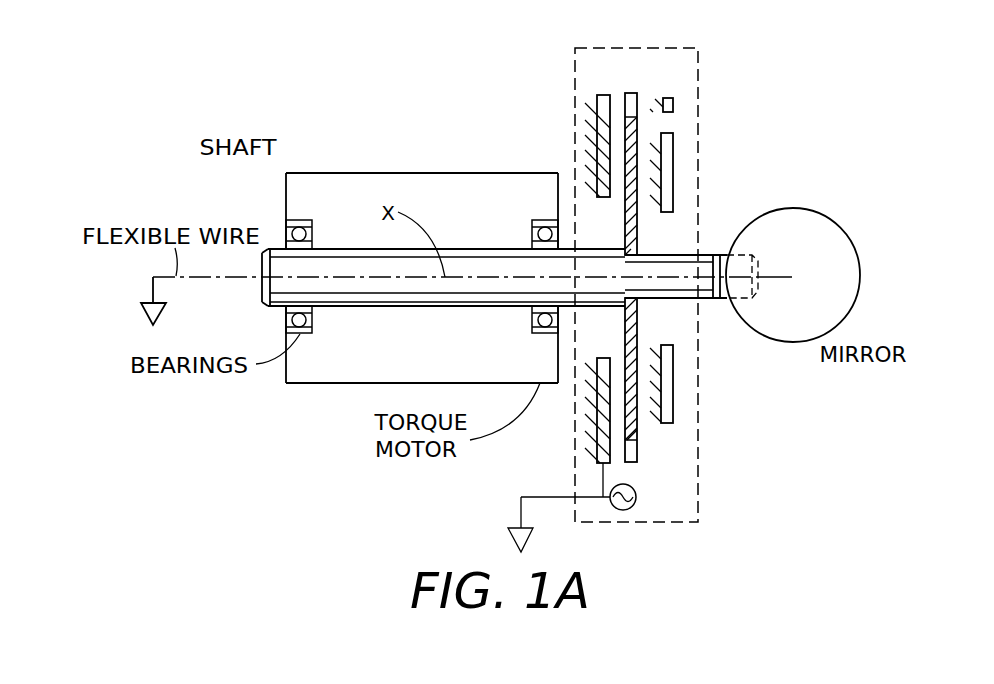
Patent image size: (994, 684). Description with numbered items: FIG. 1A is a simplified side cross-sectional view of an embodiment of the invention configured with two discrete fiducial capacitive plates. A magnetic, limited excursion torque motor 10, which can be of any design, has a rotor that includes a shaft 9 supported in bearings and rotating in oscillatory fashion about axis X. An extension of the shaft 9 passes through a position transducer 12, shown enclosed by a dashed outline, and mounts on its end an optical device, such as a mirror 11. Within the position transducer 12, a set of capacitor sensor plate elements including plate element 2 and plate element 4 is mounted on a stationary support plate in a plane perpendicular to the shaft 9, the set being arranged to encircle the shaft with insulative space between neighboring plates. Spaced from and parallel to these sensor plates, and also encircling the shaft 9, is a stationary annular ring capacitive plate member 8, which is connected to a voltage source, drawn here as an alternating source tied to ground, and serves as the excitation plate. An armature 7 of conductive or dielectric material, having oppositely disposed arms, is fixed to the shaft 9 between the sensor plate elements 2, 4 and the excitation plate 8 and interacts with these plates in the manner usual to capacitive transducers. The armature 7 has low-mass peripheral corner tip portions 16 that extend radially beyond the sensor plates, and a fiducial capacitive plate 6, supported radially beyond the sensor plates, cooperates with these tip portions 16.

The capacitor sensor plate element 2 is at (673, 172).
The capacitor sensor plate element 4 is at (673, 385).
The fiducial capacitive plate 6 is at (674, 99).
The armature 7 is at (638, 125).
The annular ring capacitive plate member 8 is at (597, 94).
The shaft 9 is at (352, 249).
The torque motor 10 is at (415, 174).
The mirror 11 is at (782, 343).
The position transducer 12 is at (698, 504).
The corner tip portions 16 is at (629, 93).